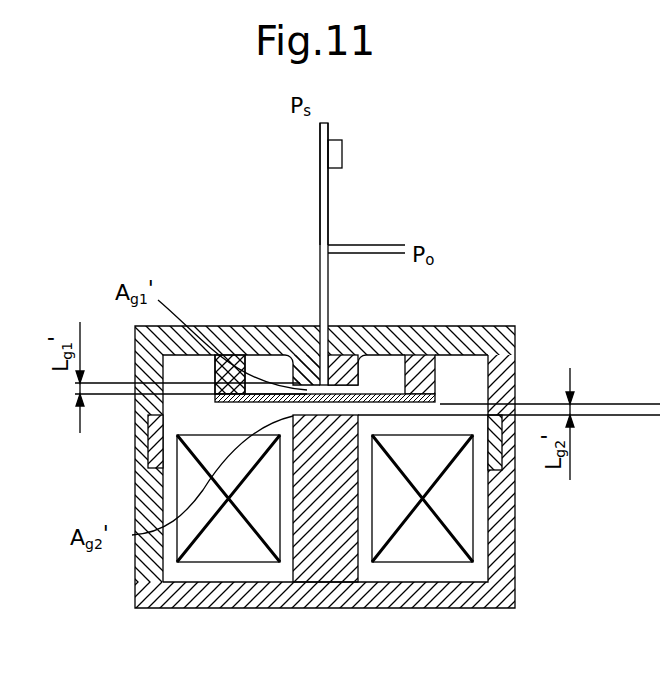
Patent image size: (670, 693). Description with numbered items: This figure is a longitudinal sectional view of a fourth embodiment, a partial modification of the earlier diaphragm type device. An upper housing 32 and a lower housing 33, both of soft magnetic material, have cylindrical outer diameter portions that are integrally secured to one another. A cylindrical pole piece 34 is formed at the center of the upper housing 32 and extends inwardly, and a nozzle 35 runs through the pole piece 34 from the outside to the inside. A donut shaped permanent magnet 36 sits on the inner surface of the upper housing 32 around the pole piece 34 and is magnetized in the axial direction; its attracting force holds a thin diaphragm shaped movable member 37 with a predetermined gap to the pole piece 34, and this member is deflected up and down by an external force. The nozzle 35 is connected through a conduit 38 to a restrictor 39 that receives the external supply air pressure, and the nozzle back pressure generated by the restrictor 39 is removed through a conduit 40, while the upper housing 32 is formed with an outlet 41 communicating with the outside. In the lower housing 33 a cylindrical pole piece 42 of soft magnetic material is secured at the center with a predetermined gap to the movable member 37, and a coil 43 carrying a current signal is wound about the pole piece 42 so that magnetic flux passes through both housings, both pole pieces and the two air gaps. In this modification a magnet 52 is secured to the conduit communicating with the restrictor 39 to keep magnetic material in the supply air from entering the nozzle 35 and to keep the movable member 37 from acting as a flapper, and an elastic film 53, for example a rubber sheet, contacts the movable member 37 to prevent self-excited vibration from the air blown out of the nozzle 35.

The upper housing 32 is at (507, 350).
The lower housing 33 is at (497, 567).
The pole piece 34 is at (345, 368).
The nozzle 35 is at (315, 340).
The permanent magnet 36 is at (453, 377).
The movable member 37 is at (413, 400).
The conduit 38 is at (330, 298).
The restrictor 39 is at (327, 218).
The conduit 40 is at (367, 245).
The outlet 41 is at (270, 335).
The pole piece 42 is at (300, 513).
The coil 43 is at (428, 547).
The magnet 52 is at (342, 152).
The elastic film 53 is at (307, 408).